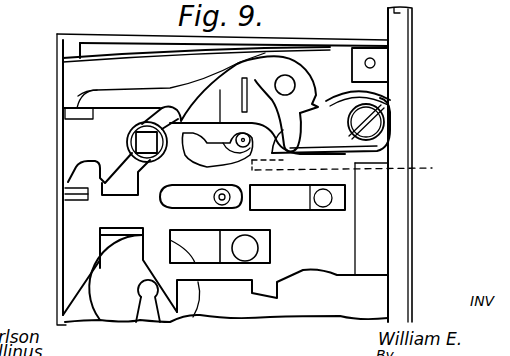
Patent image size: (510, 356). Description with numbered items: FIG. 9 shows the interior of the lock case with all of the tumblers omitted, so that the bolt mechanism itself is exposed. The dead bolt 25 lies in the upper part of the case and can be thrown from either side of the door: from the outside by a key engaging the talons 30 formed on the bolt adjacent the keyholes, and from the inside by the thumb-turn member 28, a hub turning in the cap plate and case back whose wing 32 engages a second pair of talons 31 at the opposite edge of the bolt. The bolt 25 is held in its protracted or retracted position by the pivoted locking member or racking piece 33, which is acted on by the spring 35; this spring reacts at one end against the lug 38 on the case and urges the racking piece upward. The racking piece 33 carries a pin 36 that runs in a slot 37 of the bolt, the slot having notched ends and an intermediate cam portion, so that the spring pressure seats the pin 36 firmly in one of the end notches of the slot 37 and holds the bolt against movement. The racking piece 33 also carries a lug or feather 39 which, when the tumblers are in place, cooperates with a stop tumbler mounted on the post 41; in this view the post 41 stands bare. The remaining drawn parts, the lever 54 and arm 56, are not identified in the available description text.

The dead bolt 25 is at (372, 220).
The thumb-turn member 28 is at (141, 139).
The talons 30 is at (155, 260).
The talons 31 is at (88, 173).
The wing 32 is at (103, 180).
The racking piece 33 is at (385, 98).
The spring 35 is at (388, 150).
The pin 36 is at (250, 138).
The slot 37 is at (198, 148).
The lug 38 is at (354, 168).
The feather 39 is at (252, 82).
The post 41 is at (244, 250).
The operating lever 54 is at (203, 80).
The lever arm 56 is at (98, 98).